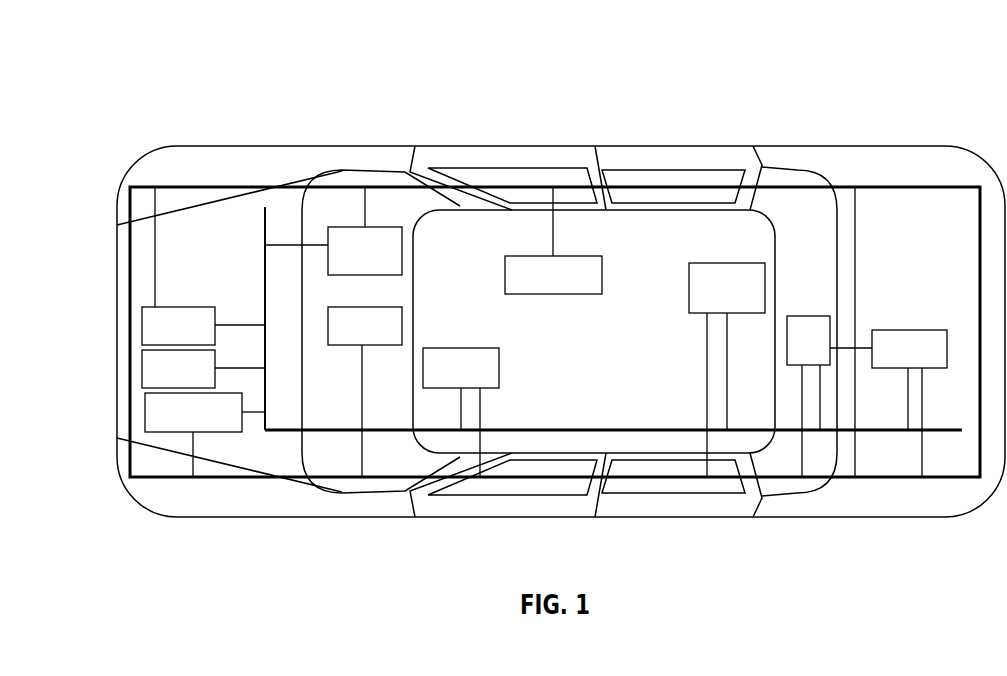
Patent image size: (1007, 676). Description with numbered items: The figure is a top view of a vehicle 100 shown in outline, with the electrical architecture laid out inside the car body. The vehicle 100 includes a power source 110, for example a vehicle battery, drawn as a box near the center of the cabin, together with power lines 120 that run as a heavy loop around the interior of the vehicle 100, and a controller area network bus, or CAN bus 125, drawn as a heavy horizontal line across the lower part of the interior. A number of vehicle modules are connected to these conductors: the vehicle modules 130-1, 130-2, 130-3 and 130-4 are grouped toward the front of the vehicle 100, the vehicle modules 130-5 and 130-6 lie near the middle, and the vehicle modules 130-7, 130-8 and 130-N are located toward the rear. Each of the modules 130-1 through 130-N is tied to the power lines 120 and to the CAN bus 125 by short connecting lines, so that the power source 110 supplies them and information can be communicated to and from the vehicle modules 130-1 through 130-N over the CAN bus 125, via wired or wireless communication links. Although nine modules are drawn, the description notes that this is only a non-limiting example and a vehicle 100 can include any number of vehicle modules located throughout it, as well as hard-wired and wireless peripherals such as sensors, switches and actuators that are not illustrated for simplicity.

The vehicle 100 is at (216, 40).
The power source 110 is at (535, 294).
The power lines 120 is at (230, 186).
The controller area network (CAN) bus 125 is at (653, 428).
The vehicle module 130-1 is at (340, 227).
The vehicle module 130-2 is at (170, 307).
The vehicle module 130-3 is at (142, 370).
The vehicle module 130-4 is at (145, 412).
The vehicle module 130-5 is at (395, 307).
The vehicle module 130-6 is at (499, 370).
The vehicle module 130-7 is at (727, 263).
The vehicle module 130-8 is at (822, 316).
The vehicle module 130-N is at (880, 330).